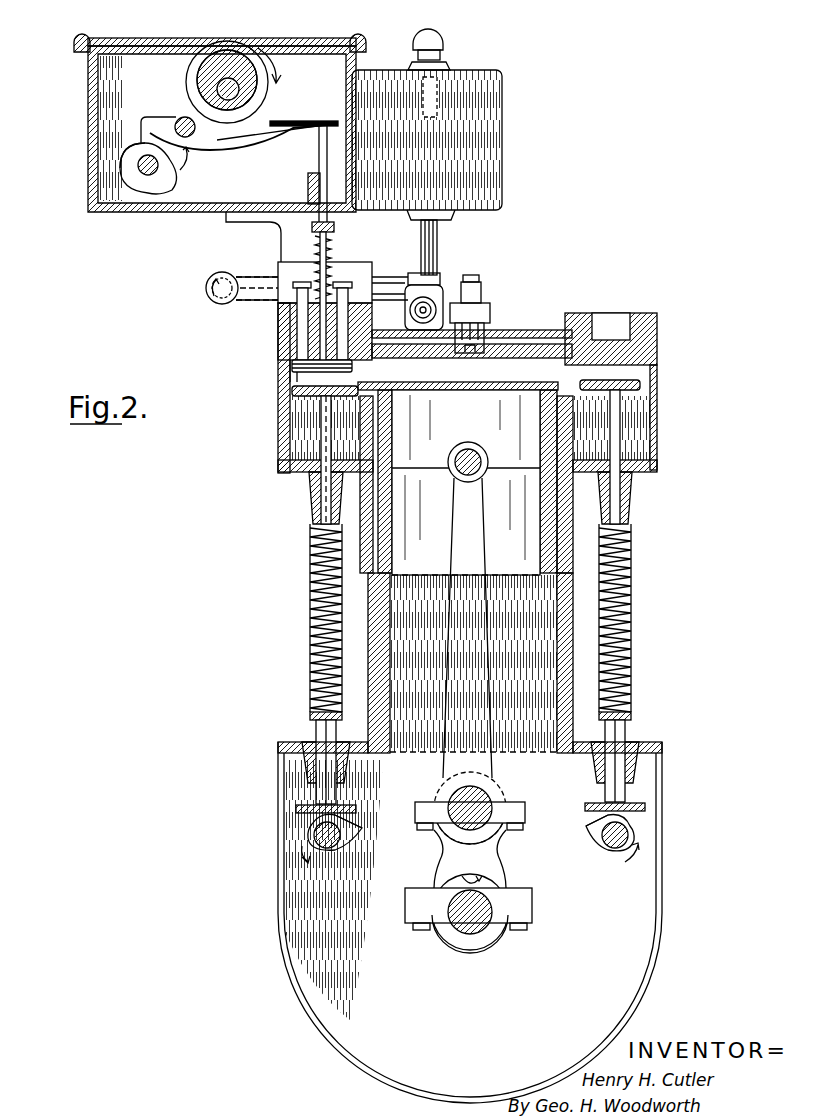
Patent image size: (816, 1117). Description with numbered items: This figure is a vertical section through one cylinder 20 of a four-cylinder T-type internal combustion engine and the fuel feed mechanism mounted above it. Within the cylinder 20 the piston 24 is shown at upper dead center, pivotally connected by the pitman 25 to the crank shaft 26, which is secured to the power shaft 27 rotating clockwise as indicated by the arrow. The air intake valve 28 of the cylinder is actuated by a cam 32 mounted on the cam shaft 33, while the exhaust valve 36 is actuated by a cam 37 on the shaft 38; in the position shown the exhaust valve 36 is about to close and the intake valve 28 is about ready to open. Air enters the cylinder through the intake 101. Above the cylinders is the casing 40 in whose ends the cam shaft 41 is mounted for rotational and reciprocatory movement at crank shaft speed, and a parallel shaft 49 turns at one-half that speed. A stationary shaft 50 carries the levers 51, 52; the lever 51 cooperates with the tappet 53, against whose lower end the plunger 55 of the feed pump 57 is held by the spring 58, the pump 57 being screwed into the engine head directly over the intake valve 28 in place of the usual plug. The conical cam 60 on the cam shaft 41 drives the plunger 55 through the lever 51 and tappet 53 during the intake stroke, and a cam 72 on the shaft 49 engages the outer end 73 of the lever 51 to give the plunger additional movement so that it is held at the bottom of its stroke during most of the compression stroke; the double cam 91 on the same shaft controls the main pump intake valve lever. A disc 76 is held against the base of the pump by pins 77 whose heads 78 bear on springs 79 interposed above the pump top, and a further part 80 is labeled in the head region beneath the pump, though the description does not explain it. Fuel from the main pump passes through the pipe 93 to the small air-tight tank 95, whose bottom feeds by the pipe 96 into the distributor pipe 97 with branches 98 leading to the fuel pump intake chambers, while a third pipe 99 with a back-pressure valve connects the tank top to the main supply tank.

The cylinder 20 is at (556, 649).
The piston 24 is at (504, 392).
The pitman 25 is at (480, 528).
The crank shaft 26 is at (494, 862).
The power shaft 27 is at (470, 914).
The air intake valve 28 is at (296, 410).
The cam 32 is at (350, 830).
The cam shaft 33 is at (306, 834).
The exhaust valve 36 is at (640, 382).
The cam 37 is at (632, 820).
The shaft 38 is at (616, 857).
The casing 40 is at (92, 112).
The cam shaft 41 is at (234, 82).
The shaft 49 is at (138, 165).
The stationary shaft 50 is at (185, 116).
The lever 51 is at (292, 125).
The lever 52 is at (240, 150).
The tappet 53 is at (320, 157).
The plunger 55 is at (278, 317).
The pump 57 is at (280, 306).
The spring 58 is at (334, 250).
The cam 60 is at (220, 72).
The cam 72 is at (142, 176).
The outer end of lever 73 is at (138, 130).
The disc 76 is at (289, 370).
The pin 77 is at (378, 292).
The head 78 is at (302, 282).
The spring 79 is at (437, 230).
The cylinder head plate 80 is at (288, 393).
The double cam 91 is at (206, 293).
The pipe 93 is at (441, 272).
The air-tight tank 95 is at (503, 112).
The pipe 96 is at (440, 243).
The distributor pipe 97 is at (446, 295).
The branch 98 is at (412, 321).
The pipe 99 is at (442, 38).
The intake 101 is at (277, 443).